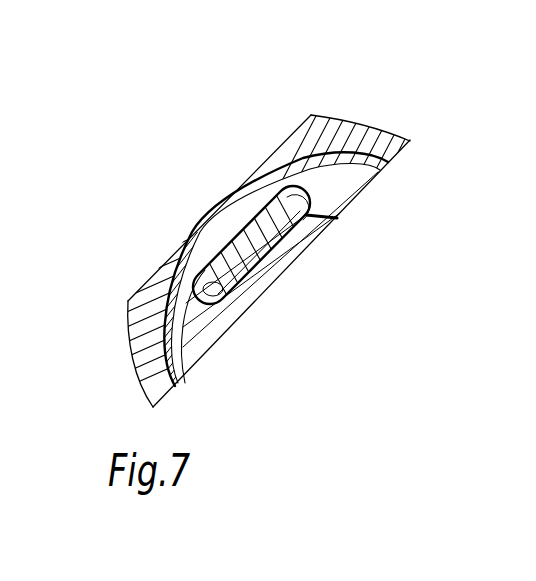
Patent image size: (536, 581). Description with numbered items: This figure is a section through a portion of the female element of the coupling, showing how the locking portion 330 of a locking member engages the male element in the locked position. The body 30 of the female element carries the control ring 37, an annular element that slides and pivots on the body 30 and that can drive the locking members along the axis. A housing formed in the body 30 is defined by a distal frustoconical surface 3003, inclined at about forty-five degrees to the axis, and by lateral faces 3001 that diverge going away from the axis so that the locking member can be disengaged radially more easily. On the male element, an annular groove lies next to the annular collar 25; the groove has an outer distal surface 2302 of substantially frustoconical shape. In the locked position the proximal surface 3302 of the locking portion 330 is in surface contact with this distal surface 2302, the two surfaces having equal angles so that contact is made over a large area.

The body 30 is at (375, 122).
The annular collar 25 is at (255, 290).
The control ring 37 is at (138, 345).
The locking portion 330 is at (181, 234).
The outer distal surface 2302 is at (212, 272).
The lateral faces 3001 is at (250, 250).
The distal frustoconical surface 3003 is at (270, 197).
The proximal surface 3302 is at (262, 262).